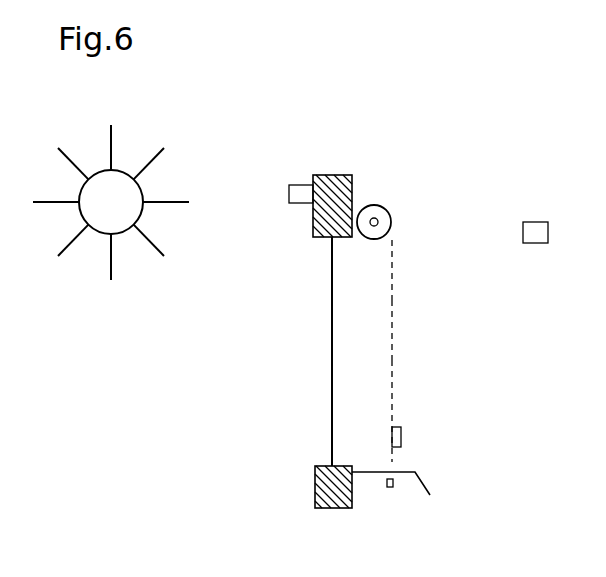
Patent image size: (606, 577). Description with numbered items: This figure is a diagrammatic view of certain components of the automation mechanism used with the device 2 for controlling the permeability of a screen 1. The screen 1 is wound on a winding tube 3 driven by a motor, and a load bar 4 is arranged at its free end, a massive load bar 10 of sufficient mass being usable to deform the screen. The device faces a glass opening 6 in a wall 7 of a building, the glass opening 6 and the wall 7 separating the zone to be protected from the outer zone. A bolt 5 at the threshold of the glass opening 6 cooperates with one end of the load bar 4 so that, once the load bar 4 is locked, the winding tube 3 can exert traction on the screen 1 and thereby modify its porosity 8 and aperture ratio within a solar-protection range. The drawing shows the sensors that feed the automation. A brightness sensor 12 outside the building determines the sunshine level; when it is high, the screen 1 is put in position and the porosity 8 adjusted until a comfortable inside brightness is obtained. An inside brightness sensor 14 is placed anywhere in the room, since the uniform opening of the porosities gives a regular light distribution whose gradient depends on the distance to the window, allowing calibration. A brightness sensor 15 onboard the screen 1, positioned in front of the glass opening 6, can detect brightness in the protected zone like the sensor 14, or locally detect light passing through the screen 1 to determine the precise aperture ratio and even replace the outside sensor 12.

The screen 1 is at (392, 320).
The device for controlling the permeability of a screen 2 is at (372, 182).
The winding tube 3 is at (384, 207).
The load bar 4 is at (393, 487).
The bolt 5 is at (378, 468).
The glass opening 6 is at (332, 390).
The wall 7 is at (313, 497).
The porosity 8 is at (392, 382).
The massive load bar 10 is at (396, 243).
The brightness sensor 12 is at (305, 190).
The inside brightness sensor 14 is at (540, 225).
The brightness sensor 15 is at (401, 440).